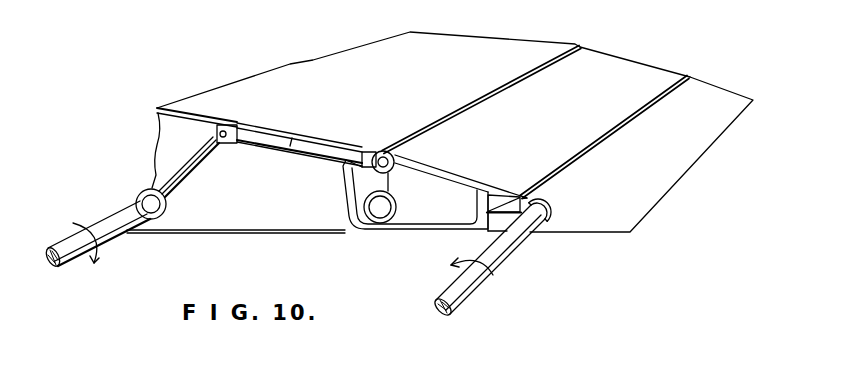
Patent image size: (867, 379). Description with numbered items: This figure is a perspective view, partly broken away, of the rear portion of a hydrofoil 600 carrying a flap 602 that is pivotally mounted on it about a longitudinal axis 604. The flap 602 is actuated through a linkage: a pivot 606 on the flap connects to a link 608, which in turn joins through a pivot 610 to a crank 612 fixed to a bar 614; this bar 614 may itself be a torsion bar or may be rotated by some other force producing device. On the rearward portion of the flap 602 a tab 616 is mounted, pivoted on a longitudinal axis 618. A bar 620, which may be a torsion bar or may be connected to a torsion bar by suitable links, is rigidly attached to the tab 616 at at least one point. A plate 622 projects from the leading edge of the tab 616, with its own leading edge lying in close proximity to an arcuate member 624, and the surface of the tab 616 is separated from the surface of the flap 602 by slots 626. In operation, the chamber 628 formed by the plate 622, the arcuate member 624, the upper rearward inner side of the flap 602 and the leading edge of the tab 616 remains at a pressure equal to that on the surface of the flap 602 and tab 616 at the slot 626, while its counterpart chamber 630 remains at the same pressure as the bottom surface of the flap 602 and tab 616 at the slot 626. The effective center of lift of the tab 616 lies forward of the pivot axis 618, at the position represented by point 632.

The hydrofoil 600 is at (477, 43).
The flap 602 is at (632, 62).
The longitudinal axis 604 is at (381, 217).
The pivot 606 is at (400, 153).
The link 608 is at (320, 124).
The pivot 610 is at (234, 124).
The crank 612 is at (212, 163).
The bar 614 is at (112, 201).
The tab 616 is at (720, 90).
The longitudinal axis 618 is at (546, 229).
The bar 620 is at (491, 277).
The plate 622 is at (513, 200).
The arcuate member 624 is at (477, 207).
The slots 626 is at (652, 103).
The chamber 628 is at (533, 197).
The chamber 630 is at (500, 222).
The point 632 is at (540, 204).